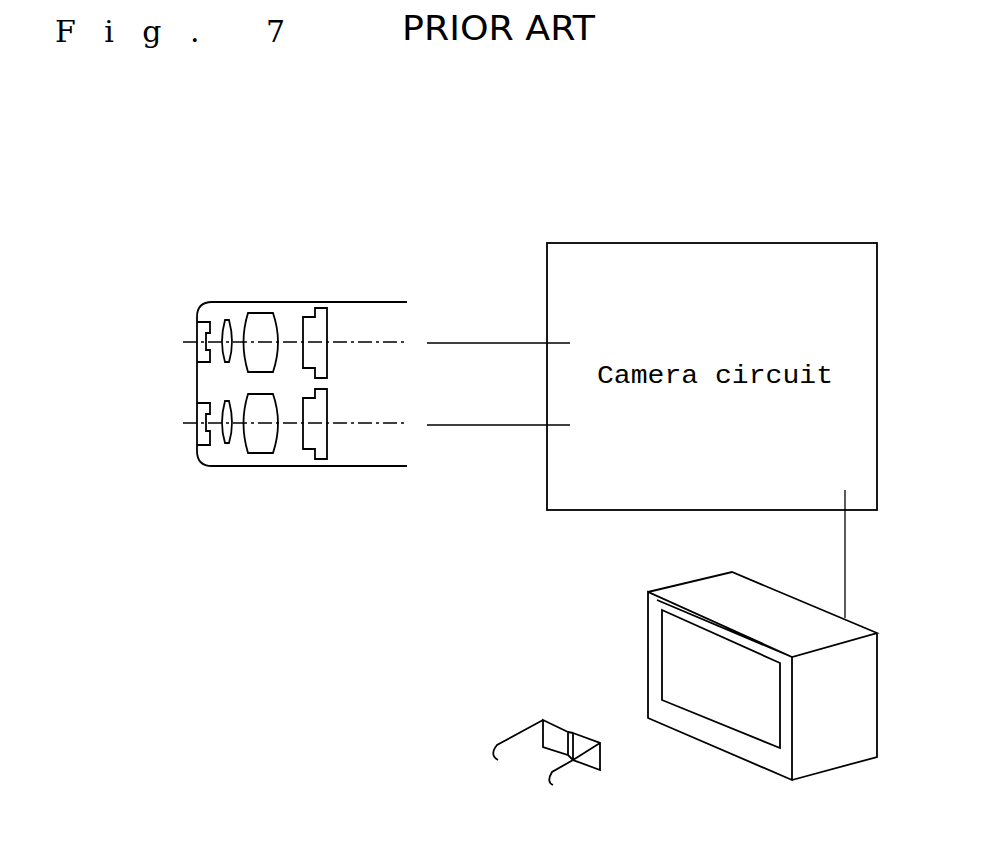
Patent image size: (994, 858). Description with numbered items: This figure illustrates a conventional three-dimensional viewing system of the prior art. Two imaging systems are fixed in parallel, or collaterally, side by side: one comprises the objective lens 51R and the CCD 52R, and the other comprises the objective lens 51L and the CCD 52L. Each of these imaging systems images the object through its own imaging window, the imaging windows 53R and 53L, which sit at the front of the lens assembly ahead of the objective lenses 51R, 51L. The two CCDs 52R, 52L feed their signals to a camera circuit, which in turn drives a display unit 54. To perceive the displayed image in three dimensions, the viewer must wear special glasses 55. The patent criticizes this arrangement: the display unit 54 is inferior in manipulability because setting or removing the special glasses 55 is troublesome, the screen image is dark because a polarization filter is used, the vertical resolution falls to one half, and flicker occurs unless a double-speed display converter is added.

The objective lens 51R is at (257, 322).
The objective lens 51L is at (262, 437).
The CCD 52R is at (318, 320).
The CCD 52L is at (318, 443).
The imaging window 53R is at (197, 342).
The imaging window 53L is at (193, 433).
The display unit 54 is at (737, 747).
The special glasses 55 is at (533, 767).